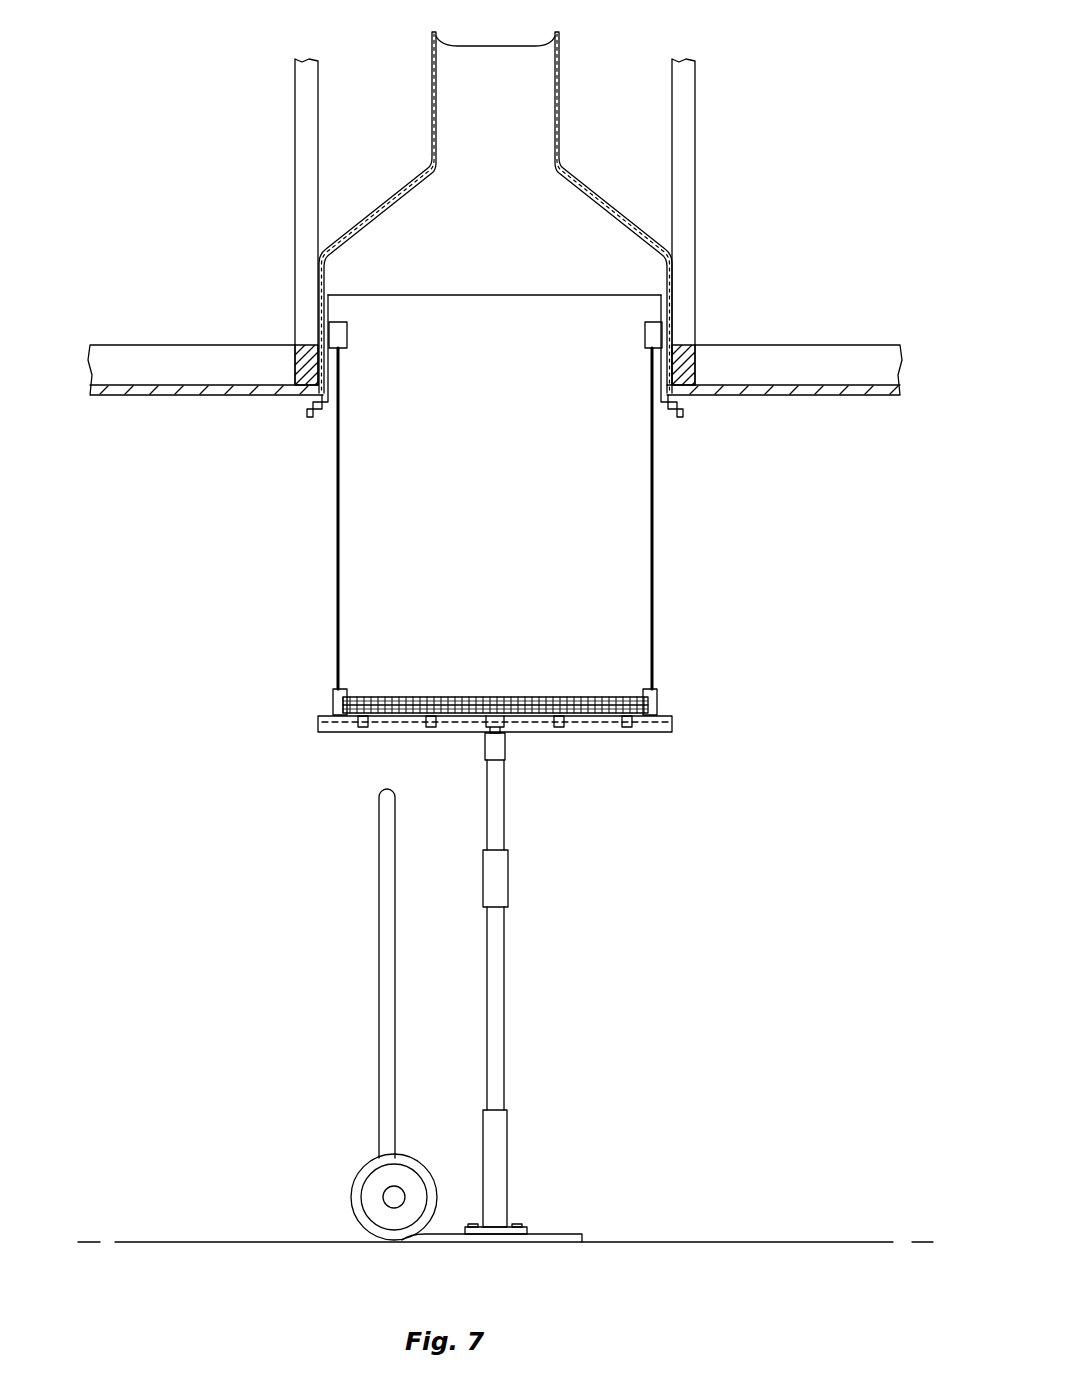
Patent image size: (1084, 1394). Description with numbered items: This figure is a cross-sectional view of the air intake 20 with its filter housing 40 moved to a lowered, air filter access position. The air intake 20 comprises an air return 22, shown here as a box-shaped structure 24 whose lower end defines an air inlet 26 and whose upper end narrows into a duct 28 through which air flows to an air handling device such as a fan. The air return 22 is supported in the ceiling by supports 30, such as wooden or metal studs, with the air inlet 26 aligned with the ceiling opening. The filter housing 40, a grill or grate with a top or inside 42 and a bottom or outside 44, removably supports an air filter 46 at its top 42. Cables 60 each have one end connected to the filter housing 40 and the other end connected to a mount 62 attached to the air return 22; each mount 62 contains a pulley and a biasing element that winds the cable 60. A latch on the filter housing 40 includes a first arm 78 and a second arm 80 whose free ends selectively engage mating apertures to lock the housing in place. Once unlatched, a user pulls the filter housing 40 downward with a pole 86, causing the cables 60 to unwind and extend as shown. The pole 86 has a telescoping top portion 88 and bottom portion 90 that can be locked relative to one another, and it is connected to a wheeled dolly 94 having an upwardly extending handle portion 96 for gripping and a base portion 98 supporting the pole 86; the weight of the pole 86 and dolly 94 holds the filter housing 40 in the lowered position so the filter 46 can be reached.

The air intake 20 is at (722, 438).
The air intake return 22 is at (497, 224).
The box-shaped structure 24 is at (326, 281).
The air inlet 26 is at (375, 422).
The duct 28 is at (563, 76).
The supports 30 is at (745, 317).
The filter housing 40 is at (537, 715).
The top or inside of filter housing 42 is at (409, 686).
The bottom or outside of filter housing 44 is at (486, 766).
The air filter 46 is at (495, 697).
The cables 60 is at (338, 552).
The mount 62 is at (348, 336).
The first arm 78 is at (440, 733).
The second arm 80 is at (540, 733).
The pole 86 is at (520, 1014).
The top portion of pole 88 is at (505, 822).
The bottom portion of pole 90 is at (504, 1050).
The dolly 94 is at (359, 1014).
The handle portion 96 is at (379, 878).
The base portion 98 is at (558, 1240).